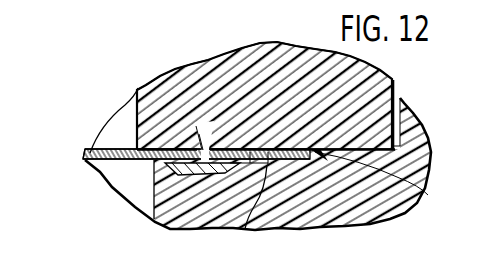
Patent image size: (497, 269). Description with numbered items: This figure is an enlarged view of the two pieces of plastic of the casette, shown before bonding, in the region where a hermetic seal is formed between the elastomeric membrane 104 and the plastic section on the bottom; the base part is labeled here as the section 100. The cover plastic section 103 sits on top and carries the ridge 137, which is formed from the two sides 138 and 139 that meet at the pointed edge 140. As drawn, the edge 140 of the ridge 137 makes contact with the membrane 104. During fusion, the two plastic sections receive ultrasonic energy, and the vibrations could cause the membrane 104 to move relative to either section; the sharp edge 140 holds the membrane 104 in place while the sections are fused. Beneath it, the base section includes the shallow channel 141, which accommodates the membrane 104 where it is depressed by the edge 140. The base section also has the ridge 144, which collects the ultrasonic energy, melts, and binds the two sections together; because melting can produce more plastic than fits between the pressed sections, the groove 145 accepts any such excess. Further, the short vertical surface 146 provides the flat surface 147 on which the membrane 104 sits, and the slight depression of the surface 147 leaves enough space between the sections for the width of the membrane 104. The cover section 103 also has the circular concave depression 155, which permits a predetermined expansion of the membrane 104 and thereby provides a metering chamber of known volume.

The lower body / mounting block 100 is at (372, 208).
The cover plastic section 103 is at (284, 50).
The membrane 104 is at (85, 156).
The ridge 137 is at (202, 150).
The side of ridge 138 is at (208, 152).
The side of ridge 139 is at (199, 134).
The pointed edge 140 is at (167, 200).
The shallow channel 141 is at (207, 236).
The ridge 144 is at (307, 150).
The groove 145 is at (428, 195).
The short vertical surface 146 is at (280, 228).
The flat surface 147 is at (224, 154).
The circular concave depression 155 is at (68, 261).